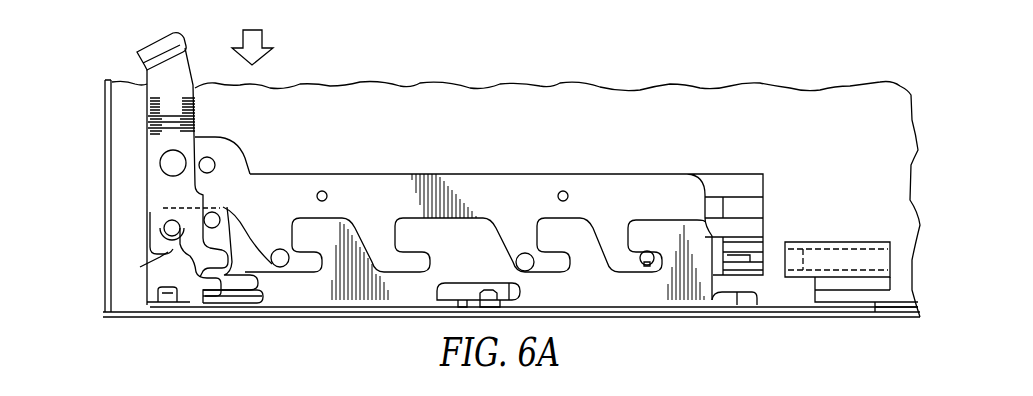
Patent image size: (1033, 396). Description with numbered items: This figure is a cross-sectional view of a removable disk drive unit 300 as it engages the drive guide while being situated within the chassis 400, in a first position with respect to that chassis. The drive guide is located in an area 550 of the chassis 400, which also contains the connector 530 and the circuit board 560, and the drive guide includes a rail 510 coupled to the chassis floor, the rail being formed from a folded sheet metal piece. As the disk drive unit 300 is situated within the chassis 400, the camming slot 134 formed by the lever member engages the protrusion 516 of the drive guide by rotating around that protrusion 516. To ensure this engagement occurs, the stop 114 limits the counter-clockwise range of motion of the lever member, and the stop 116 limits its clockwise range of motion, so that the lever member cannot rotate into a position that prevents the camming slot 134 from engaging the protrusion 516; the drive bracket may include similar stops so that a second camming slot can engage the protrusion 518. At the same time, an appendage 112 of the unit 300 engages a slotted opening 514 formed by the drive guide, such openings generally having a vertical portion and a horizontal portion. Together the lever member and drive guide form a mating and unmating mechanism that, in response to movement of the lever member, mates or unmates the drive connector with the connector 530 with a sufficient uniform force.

The chassis 400 is at (107, 153).
The stop 116 is at (209, 156).
The protrusion 518 is at (305, 228).
The removable disk drive unit 300 is at (468, 158).
The stop 114 is at (209, 210).
The protrusion 516 is at (166, 222).
The camming slot 134 is at (142, 266).
The slotted opening 514 is at (273, 233).
The appendage 112 is at (283, 267).
The rail 510 is at (384, 290).
The connector 530 is at (827, 241).
The area 550 is at (792, 319).
The circuit board 560 is at (877, 304).